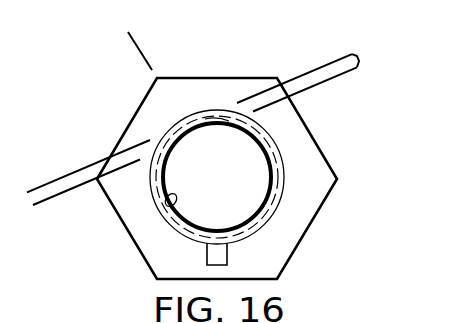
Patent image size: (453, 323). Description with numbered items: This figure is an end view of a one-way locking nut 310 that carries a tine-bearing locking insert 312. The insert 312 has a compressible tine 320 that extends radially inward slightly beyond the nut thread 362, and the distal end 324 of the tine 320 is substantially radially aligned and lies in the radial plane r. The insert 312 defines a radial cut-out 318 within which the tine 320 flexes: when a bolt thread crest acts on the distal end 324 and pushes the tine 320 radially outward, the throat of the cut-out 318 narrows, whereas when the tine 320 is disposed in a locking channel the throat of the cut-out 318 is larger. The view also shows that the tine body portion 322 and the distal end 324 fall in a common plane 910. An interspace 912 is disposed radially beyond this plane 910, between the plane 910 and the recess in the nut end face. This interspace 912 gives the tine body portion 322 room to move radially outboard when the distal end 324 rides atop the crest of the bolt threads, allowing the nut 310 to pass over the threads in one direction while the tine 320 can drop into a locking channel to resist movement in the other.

The radial plane r is at (132, 33).
The one-way locking nut 310 is at (344, 159).
The insert 312 is at (273, 137).
The radial cut-out 318 is at (181, 132).
The compressible tine 320 is at (198, 146).
The tine body portion 322 is at (206, 122).
The distal end 324 is at (190, 132).
The nut thread 362 is at (157, 200).
The plane 910 is at (360, 58).
The interspace 912 is at (207, 118).